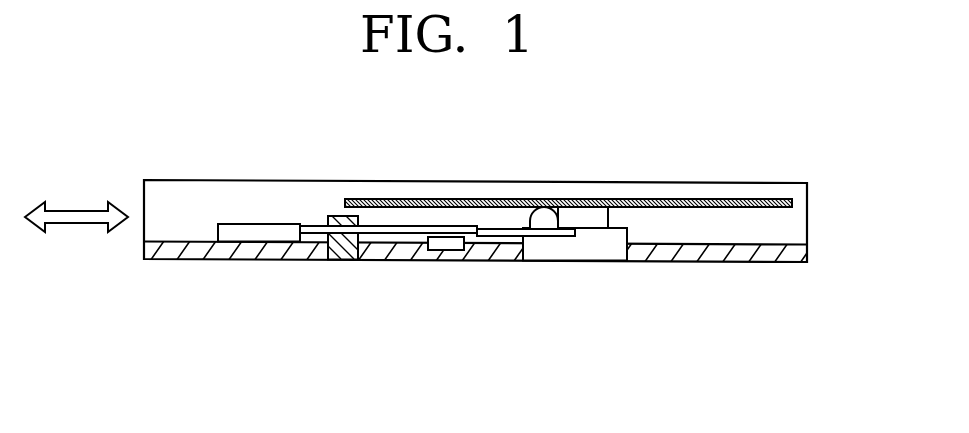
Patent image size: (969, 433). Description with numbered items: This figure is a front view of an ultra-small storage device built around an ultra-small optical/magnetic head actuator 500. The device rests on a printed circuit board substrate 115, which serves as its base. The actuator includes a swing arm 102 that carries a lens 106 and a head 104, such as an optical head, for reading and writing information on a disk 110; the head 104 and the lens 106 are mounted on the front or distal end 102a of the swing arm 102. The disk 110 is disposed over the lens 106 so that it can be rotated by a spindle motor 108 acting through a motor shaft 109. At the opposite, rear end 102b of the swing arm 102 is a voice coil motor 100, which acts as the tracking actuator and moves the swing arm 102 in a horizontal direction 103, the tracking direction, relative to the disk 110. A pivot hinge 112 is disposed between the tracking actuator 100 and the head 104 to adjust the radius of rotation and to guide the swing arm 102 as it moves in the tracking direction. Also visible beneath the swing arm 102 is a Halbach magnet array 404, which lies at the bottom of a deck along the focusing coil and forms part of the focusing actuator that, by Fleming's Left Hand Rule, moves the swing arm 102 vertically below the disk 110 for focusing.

The voice coil motor 100 is at (262, 235).
The swing arm 102 is at (403, 233).
The distal end 102a is at (447, 226).
The rear end 102b is at (314, 224).
The horizontal direction 103 is at (78, 210).
The head 104 is at (536, 236).
The lens 106 is at (545, 216).
The spindle motor 108 is at (597, 254).
The motor shaft 109 is at (588, 218).
The disk 110 is at (793, 203).
The pivot hinge 112 is at (340, 246).
The printed circuit board substrate 115 is at (797, 255).
The Halbach magnet array 404 is at (450, 250).
The optical/magnetic head actuator 500 is at (336, 338).